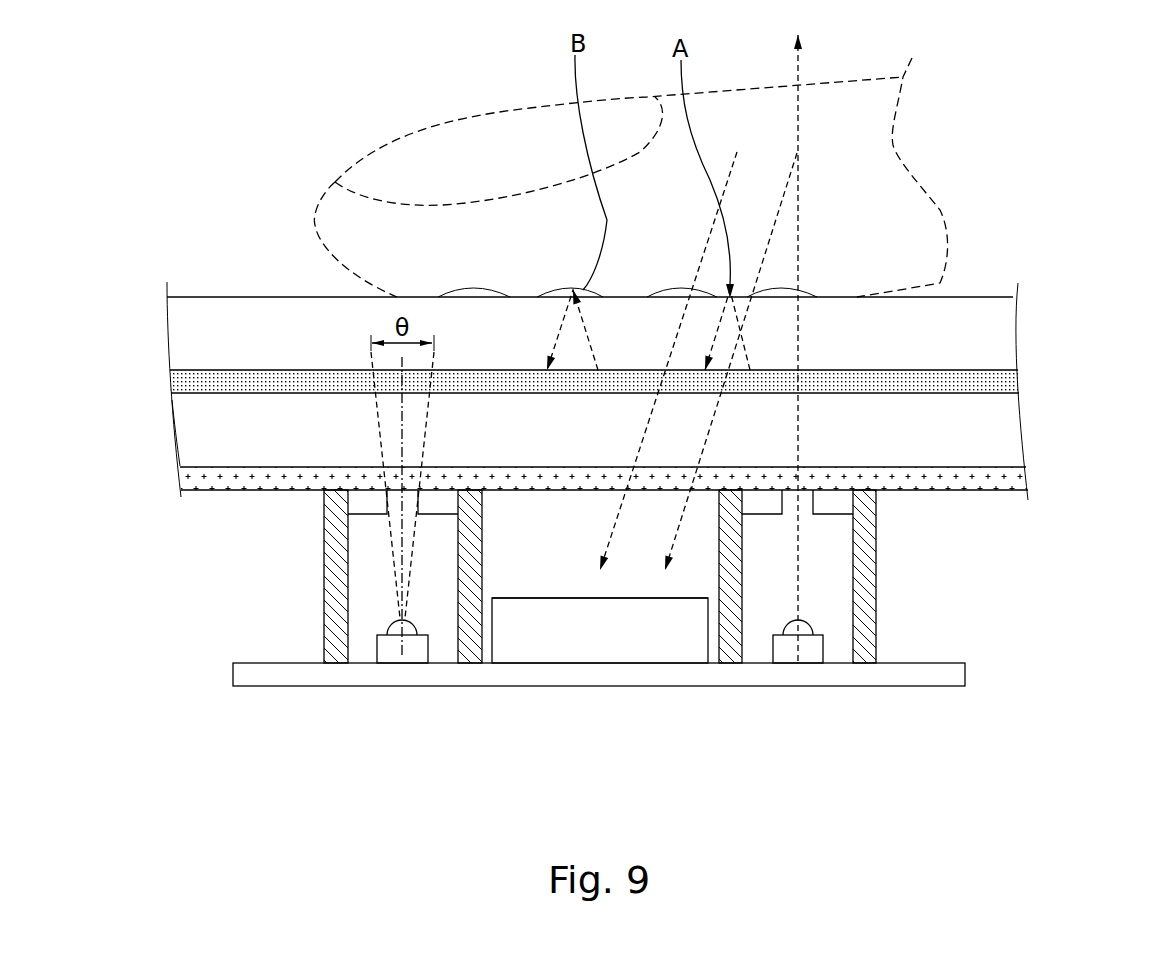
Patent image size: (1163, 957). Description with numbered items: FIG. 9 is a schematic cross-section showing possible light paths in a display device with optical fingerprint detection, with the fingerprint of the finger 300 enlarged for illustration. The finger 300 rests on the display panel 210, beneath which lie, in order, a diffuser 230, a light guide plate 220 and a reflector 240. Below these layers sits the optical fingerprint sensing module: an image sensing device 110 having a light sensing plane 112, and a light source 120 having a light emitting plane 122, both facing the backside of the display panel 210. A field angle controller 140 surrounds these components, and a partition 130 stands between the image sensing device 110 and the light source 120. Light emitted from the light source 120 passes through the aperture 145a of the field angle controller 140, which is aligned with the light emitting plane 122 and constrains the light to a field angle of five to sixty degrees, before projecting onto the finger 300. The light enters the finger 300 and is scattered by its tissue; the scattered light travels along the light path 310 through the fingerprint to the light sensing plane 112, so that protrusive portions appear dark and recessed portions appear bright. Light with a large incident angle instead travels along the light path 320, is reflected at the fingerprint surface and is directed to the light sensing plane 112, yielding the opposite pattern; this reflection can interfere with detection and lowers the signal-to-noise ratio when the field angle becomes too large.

The image sensing device 110 is at (540, 650).
The light sensing plane 112 is at (625, 598).
The light source 120 is at (790, 650).
The light emitting plane 122 is at (810, 638).
The partition wall 130 is at (730, 648).
The field angle controller 140 is at (878, 603).
The aperture 145a is at (803, 507).
The display panel 210 is at (175, 335).
The light guide plate 220 is at (195, 433).
The diffuser 230 is at (177, 378).
The reflector 240 is at (185, 478).
The finger 300 is at (735, 110).
The light path 310 is at (705, 435).
The light path 320 is at (745, 352).